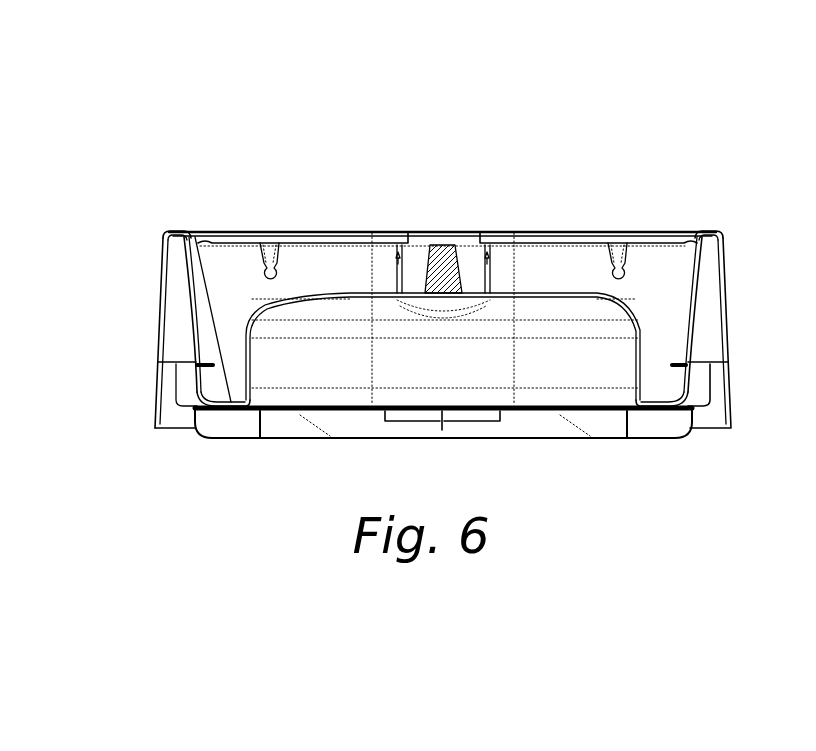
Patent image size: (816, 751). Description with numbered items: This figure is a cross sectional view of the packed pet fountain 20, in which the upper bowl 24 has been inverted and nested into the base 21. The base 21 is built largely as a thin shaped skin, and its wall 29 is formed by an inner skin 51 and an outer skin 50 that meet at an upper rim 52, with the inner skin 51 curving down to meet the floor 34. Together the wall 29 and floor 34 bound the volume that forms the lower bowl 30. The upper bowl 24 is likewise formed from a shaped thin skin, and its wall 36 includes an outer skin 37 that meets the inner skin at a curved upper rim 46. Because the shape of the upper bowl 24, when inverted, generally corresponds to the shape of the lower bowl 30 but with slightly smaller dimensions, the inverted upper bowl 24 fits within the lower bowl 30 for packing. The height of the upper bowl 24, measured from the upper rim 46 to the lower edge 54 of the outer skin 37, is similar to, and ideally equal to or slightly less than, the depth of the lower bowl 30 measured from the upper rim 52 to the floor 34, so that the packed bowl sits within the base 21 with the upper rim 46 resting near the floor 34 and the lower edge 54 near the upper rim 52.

The pet fountain 20 is at (347, 172).
The base 21 is at (275, 440).
The upper bowl 24 is at (548, 262).
The wall 29 is at (157, 350).
The lower bowl 30 is at (448, 389).
The floor 34 is at (548, 403).
The wall 36 is at (633, 397).
The outer skin 37 is at (659, 402).
The upper rim 46 is at (232, 405).
The outer skin 50 is at (153, 300).
The inner skin 51 is at (212, 315).
The upper rim 52 is at (172, 233).
The lower edge 54 is at (370, 230).